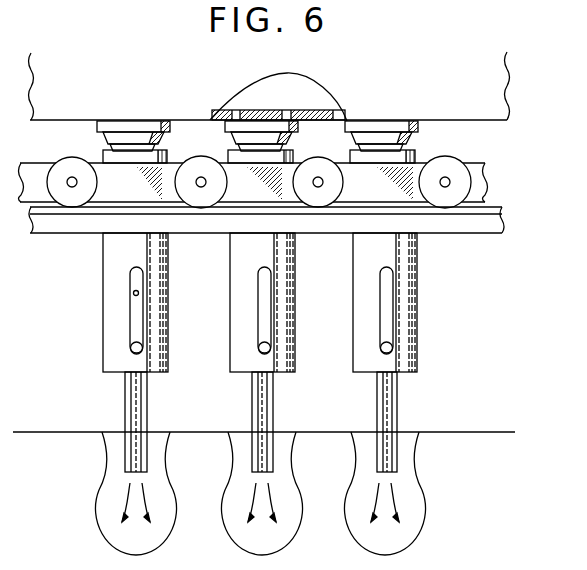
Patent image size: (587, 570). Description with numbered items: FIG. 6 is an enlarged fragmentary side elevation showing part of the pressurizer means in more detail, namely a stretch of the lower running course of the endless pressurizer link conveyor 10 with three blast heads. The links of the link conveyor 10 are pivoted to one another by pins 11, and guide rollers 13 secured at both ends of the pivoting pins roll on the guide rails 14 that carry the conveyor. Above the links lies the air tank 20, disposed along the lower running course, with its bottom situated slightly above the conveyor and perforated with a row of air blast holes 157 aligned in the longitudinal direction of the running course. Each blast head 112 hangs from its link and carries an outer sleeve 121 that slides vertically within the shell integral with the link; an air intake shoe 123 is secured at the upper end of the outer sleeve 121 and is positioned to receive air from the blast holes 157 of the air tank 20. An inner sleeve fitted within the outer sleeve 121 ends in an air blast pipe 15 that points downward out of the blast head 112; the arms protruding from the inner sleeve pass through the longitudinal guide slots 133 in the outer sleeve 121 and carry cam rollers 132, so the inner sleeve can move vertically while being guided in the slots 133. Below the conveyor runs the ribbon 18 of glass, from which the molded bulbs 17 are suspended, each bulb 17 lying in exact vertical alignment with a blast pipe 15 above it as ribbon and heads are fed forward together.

The pressurizer link conveyor 10 is at (102, 167).
The pin 11 is at (70, 178).
The guide roller 13 is at (196, 170).
The guide rail 14 is at (500, 213).
The air blast pipe 15 is at (147, 405).
The molded bulb 17 is at (96, 508).
The ribbon 18 is at (60, 432).
The air tank 20 is at (500, 80).
The hanger block 112 is at (173, 290).
The outer sleeve 121 is at (160, 351).
The air intake shoe 123 is at (131, 124).
The cam roller 132 is at (130, 351).
The guide slot 133 is at (133, 294).
The air blast hole 157 is at (286, 112).